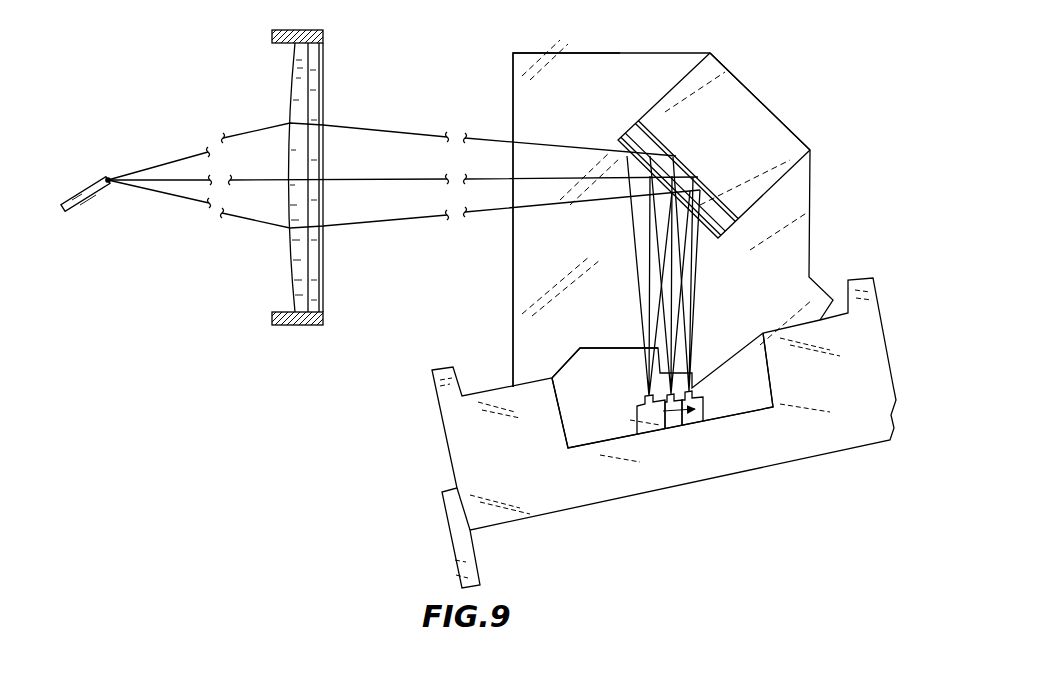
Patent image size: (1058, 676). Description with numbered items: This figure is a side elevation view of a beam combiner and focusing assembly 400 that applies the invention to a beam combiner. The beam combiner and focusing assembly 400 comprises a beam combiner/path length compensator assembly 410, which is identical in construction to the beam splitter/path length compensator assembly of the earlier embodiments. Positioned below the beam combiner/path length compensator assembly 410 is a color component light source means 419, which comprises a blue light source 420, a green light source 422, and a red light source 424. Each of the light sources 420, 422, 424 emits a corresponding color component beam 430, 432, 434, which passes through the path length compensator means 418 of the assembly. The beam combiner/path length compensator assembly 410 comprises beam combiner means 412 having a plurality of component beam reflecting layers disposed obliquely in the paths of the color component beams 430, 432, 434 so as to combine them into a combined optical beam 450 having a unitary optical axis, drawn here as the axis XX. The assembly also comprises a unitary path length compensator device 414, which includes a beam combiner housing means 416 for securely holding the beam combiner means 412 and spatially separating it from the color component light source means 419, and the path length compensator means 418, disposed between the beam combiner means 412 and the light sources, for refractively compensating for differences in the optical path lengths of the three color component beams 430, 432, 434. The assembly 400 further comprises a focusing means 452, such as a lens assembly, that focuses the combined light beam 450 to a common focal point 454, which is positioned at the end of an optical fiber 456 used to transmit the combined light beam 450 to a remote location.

The beam combiner and focusing assembly 400 is at (381, 384).
The beam combiner/path length compensator assembly 410 is at (605, 42).
The beam combiner means 412 is at (782, 138).
The unitary path length compensator device 414 is at (518, 283).
The beam combiner housing means 416 is at (765, 88).
The path length compensator means 418 is at (748, 387).
The color component light source means 419 is at (649, 448).
The blue light source 420 is at (645, 407).
The green light source 422 is at (672, 410).
The red light source 424 is at (698, 402).
The color component beam 430 is at (640, 264).
The color component beam 432 is at (675, 283).
The color component beam 434 is at (688, 300).
The combined optical beam 450 is at (373, 143).
The focusing means 452 is at (335, 87).
The common focal point 454 is at (109, 178).
The optical fiber 456 is at (89, 206).
The optical axis XX is at (374, 177).